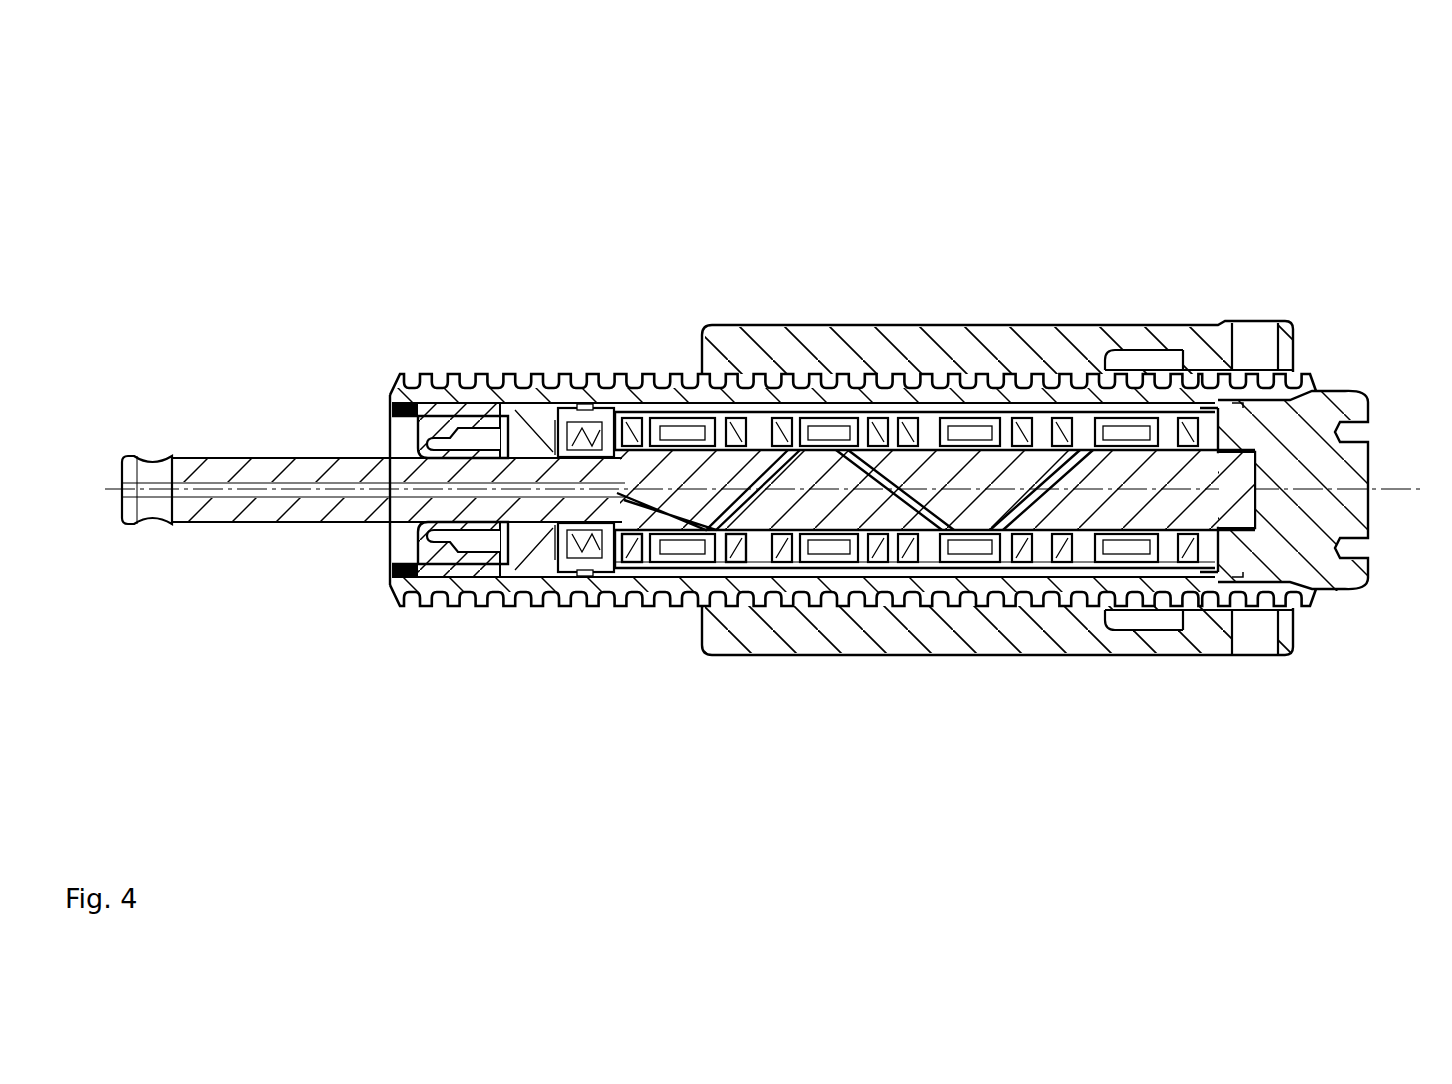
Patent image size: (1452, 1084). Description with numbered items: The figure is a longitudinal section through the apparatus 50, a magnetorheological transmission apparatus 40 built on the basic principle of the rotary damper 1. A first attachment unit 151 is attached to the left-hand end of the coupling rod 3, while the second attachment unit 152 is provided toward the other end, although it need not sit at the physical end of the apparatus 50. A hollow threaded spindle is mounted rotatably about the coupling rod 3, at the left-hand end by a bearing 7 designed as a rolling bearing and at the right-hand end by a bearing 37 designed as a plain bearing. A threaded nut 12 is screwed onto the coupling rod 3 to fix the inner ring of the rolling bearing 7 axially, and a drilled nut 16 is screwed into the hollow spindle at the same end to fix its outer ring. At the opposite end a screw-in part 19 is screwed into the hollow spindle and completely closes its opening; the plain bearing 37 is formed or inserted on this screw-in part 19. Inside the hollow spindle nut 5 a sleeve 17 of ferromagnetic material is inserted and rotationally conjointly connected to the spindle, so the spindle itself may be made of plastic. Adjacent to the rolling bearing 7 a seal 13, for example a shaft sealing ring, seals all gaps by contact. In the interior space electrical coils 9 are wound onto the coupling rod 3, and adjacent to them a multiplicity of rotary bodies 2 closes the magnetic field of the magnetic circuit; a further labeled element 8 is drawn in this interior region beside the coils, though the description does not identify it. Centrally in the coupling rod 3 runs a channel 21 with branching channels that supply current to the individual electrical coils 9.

The apparatus 50 is at (395, 190).
The first attachment unit 151 is at (148, 400).
The second attachment unit 152 is at (1233, 292).
The rotary damper 1 is at (618, 320).
The rotary bodies 2 is at (628, 566).
The coupling rod 3 is at (248, 460).
The spindle nut 5 is at (920, 342).
The bearing 7 is at (523, 565).
The inner sleeve 8 is at (683, 418).
The electrical coils 9 is at (830, 545).
The threaded nut 12 is at (440, 455).
The seal 13 is at (567, 418).
The drilled nut 16 is at (427, 560).
The sleeve 17 is at (680, 565).
The screw-in part 19 is at (1342, 514).
The channel 21 is at (192, 492).
The bearing 37 is at (1235, 447).
The magnetorheological transmission apparatus 40 is at (787, 308).